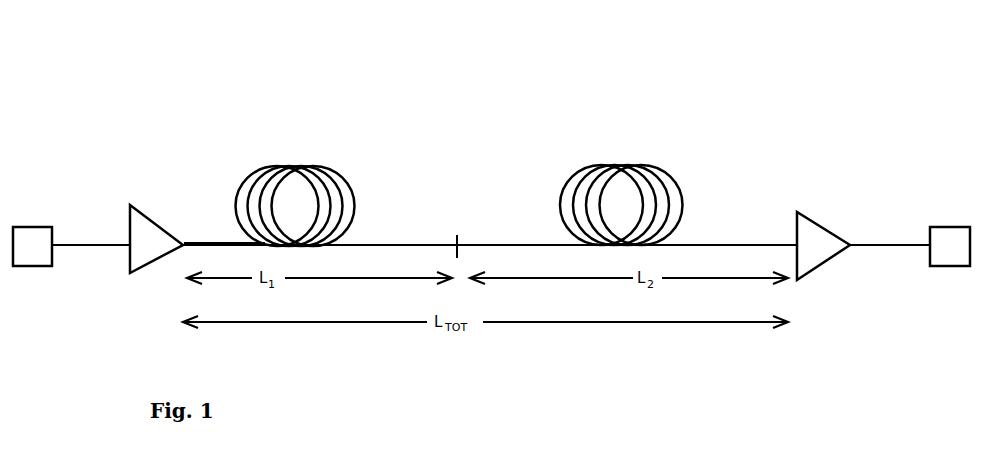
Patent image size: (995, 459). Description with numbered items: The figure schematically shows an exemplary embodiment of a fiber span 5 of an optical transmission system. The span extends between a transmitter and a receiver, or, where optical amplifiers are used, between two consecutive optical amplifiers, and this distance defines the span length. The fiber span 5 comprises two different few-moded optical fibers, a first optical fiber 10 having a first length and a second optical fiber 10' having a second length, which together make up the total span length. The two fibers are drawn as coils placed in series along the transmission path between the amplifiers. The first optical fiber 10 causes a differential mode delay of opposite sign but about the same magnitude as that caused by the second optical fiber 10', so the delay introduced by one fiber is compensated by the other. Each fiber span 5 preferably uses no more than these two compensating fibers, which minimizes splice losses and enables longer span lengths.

The fiber span 5 is at (658, 76).
The first optical fiber 10 is at (319, 183).
The second optical fiber 10' is at (648, 179).